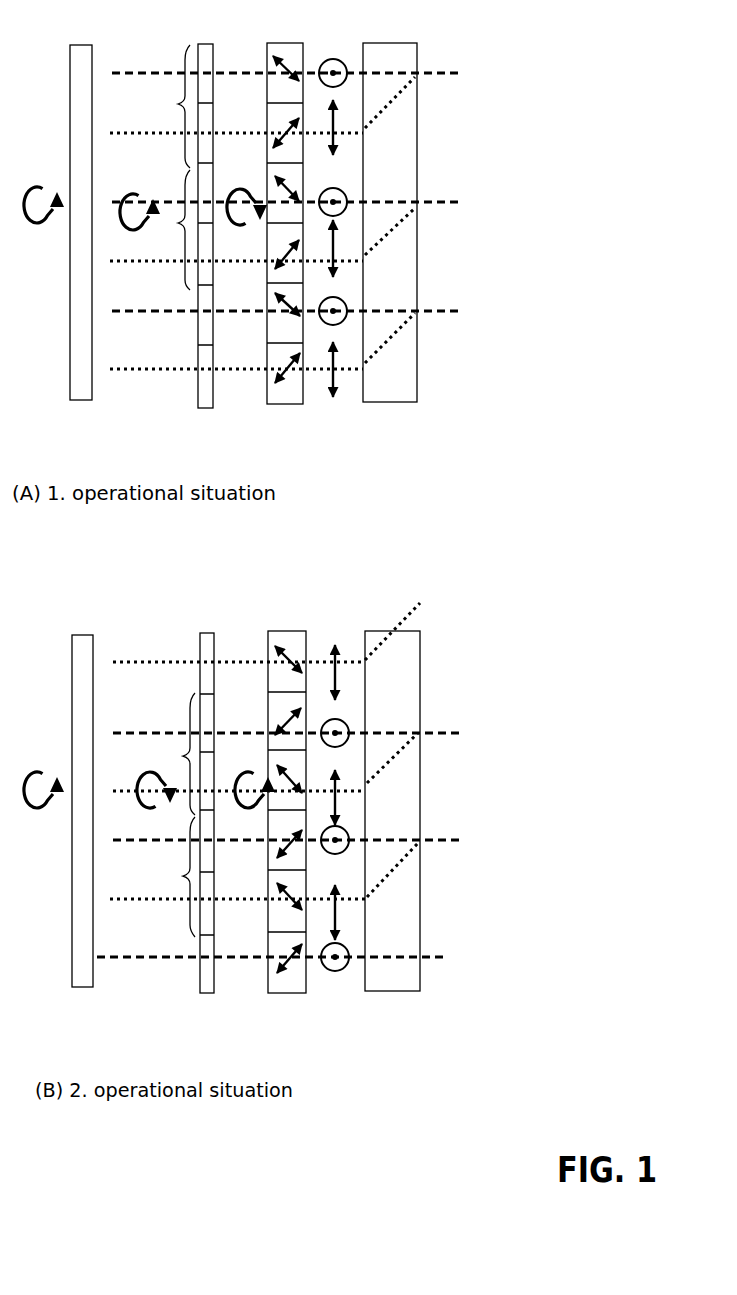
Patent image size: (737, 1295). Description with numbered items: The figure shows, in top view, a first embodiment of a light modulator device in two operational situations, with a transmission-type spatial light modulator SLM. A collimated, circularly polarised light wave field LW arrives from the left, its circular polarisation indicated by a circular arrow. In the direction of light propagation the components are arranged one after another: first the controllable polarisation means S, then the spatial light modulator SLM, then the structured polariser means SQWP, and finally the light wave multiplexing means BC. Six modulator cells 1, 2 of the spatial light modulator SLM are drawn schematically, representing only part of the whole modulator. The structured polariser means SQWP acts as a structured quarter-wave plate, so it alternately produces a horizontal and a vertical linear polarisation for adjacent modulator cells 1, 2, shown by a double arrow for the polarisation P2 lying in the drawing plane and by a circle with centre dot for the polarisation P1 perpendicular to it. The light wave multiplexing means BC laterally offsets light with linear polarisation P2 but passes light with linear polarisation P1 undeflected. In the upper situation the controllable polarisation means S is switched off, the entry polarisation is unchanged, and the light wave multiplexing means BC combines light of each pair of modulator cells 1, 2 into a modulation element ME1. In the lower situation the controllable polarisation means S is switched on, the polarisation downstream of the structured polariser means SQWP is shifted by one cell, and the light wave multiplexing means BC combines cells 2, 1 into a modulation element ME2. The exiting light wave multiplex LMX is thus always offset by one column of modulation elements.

The controllable polarisation means S is at (83, 46).
The light wave field LW is at (113, 73).
The modulation element ME1 is at (161, 167).
The modulation element ME2 is at (166, 815).
The modulator cell 1 is at (207, 64).
The modulator cell 2 is at (207, 126).
The linear polarisation P1 is at (334, 70).
The linear polarisation P2 is at (357, 119).
The light wave multiplex LMX is at (434, 73).
The spatial light modulator SLM is at (204, 532).
The structured polariser means SQWP is at (284, 531).
The light wave multiplexing means BC is at (391, 531).